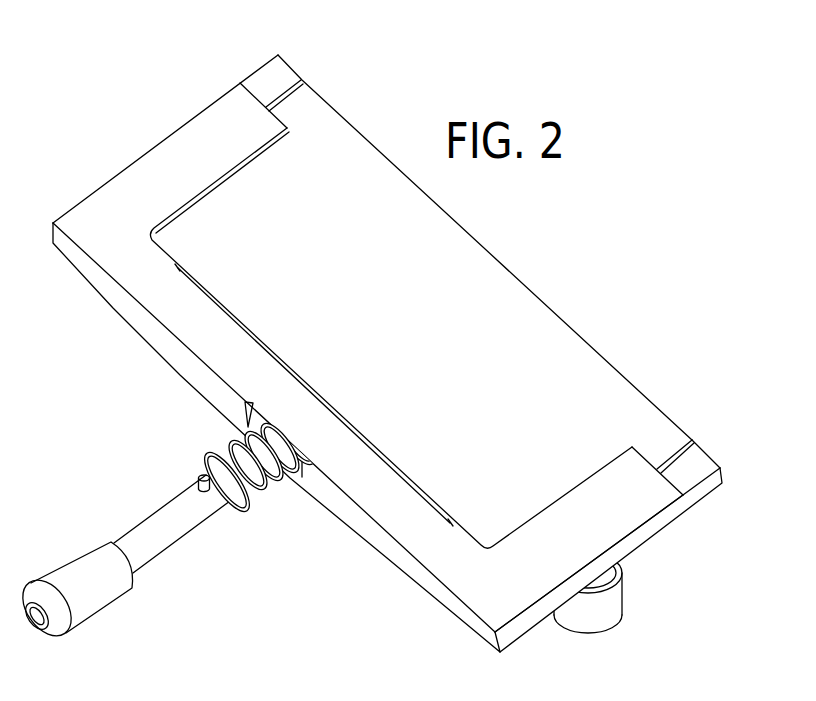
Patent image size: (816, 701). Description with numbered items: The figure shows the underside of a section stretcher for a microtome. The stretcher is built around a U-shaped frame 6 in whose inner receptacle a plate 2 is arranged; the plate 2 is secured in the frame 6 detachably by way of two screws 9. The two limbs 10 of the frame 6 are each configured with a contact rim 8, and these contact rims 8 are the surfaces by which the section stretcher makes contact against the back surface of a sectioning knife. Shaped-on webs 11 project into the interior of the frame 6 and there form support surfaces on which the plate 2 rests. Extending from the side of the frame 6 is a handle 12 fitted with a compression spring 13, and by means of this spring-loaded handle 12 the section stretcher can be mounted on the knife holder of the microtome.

The plate 2 is at (519, 330).
The U-shaped frame 6 is at (178, 353).
The contact rim 8 is at (291, 73).
The screw 9 is at (600, 602).
The limb 10 is at (240, 78).
The web 11 is at (227, 158).
The handle 12 is at (167, 532).
The compression spring 13 is at (270, 498).